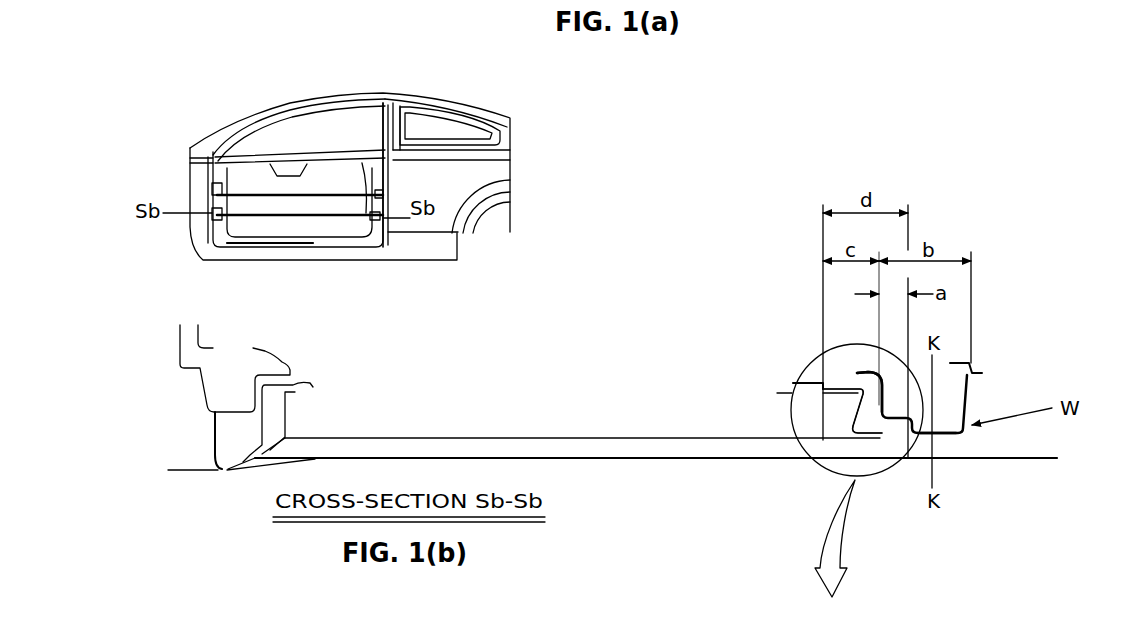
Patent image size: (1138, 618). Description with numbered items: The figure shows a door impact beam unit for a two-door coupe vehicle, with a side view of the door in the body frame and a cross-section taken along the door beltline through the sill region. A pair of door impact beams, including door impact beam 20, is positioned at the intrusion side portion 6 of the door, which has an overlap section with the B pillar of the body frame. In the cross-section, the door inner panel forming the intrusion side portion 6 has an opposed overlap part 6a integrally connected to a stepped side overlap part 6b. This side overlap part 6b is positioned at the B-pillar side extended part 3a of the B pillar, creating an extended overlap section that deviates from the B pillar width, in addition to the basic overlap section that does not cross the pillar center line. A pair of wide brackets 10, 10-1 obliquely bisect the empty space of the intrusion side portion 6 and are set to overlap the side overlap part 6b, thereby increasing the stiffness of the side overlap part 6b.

The B-pillar side extended part 3a is at (857, 373).
The intrusion side portion 6 is at (735, 532).
The opposed overlap part 6a is at (870, 440).
The side overlap part 6b is at (813, 385).
The wide bracket 10 is at (950, 432).
The wide bracket 10-1 is at (952, 434).
The door impact beam 20 is at (280, 195).